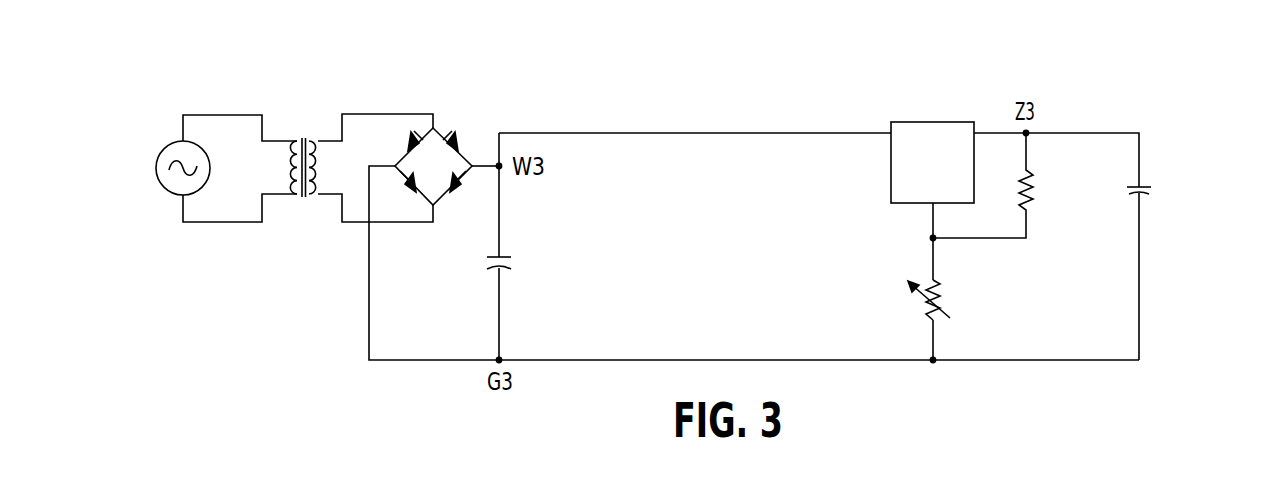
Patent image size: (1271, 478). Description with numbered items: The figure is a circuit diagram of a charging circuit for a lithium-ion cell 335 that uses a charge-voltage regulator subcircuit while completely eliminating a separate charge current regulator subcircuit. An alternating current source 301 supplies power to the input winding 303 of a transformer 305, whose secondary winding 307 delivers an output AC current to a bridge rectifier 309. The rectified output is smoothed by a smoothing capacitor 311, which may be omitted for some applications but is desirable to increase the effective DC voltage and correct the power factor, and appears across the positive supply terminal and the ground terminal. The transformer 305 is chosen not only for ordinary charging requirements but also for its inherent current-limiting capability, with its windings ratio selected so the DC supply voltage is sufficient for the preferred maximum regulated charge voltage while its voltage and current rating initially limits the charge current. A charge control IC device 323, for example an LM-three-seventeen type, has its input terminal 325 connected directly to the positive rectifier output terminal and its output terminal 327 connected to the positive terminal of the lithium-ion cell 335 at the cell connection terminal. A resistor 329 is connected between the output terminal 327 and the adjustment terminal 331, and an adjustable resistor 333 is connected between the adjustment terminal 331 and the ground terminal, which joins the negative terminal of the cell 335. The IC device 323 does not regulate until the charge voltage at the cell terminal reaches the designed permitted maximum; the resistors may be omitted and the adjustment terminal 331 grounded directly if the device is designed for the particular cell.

The alternating current source 301 is at (172, 195).
The input winding 303 is at (285, 197).
The transformer 305 is at (303, 138).
The secondary winding 307 is at (330, 197).
The bridge rectifier 309 is at (441, 133).
The smoothing capacitor 311 is at (515, 262).
The charge control IC device 323 is at (925, 122).
The input terminal 325 is at (890, 131).
The output terminal 327 is at (975, 131).
The resistor 329 is at (1033, 196).
The adjustment terminal 331 is at (930, 204).
The adjustable resistor 333 is at (940, 300).
The lithium-ion cell 335 is at (1155, 189).